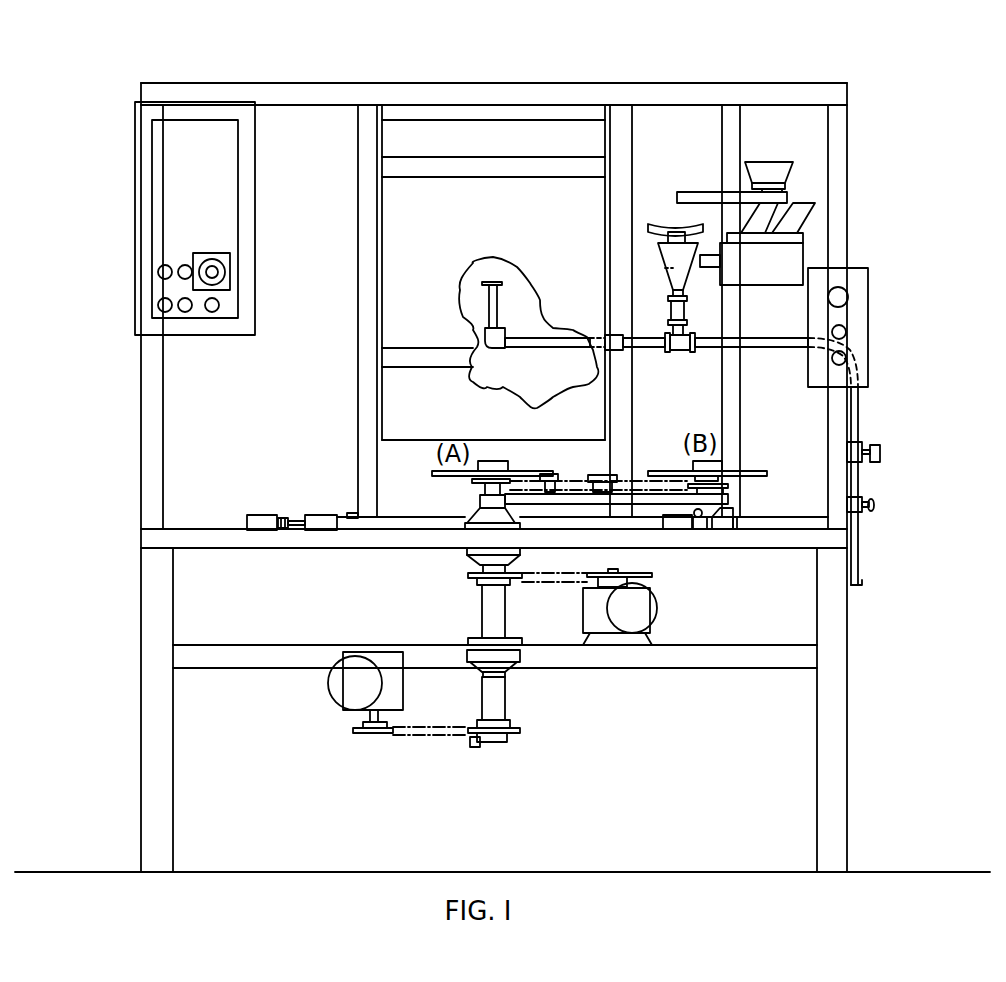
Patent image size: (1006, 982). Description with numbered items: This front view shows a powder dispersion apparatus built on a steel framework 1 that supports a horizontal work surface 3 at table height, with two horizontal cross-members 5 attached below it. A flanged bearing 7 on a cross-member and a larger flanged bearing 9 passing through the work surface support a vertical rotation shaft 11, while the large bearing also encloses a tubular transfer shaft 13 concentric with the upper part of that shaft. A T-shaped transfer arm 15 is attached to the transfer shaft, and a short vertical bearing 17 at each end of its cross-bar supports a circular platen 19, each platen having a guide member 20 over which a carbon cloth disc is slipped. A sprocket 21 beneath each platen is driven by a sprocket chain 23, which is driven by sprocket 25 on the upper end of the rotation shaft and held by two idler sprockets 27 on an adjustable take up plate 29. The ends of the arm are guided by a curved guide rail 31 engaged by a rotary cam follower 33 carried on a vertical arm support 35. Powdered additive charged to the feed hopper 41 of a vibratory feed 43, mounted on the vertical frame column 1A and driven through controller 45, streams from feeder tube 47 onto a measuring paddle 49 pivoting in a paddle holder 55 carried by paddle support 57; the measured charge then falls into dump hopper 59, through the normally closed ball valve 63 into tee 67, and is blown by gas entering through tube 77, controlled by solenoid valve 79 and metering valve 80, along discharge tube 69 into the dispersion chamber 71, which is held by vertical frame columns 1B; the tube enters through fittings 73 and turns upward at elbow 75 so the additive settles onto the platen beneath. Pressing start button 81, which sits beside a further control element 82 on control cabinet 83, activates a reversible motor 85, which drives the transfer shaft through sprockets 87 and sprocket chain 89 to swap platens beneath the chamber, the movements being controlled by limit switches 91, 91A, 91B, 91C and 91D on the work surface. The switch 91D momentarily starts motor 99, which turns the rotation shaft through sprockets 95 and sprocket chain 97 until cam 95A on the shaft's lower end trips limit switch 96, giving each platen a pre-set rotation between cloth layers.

The steel framework 1 is at (830, 648).
The vertical frame column 1A is at (728, 148).
The vertical frame columns 1B is at (363, 132).
The horizontal work surface 3 is at (827, 538).
The horizontal cross-members 5 is at (748, 660).
The flanged bearing 7 is at (502, 657).
The larger flanged bearing 9 is at (472, 557).
The rotation shaft 11 is at (480, 698).
The tubular transfer shaft 13 is at (480, 613).
The T-shaped transfer arm 15 is at (725, 499).
The short vertical bearing 17 is at (484, 490).
The circular platen 19 is at (434, 468).
The guide member 20 is at (490, 460).
The sprocket 21 is at (722, 484).
The sprocket chain 23 is at (635, 482).
The sprocket 25 is at (472, 482).
The idler sprockets 27 is at (612, 478).
The adjustable take up plate 29 is at (572, 490).
The curved guide rail 31 is at (287, 518).
The rotary cam follower 33 is at (703, 530).
The vertical arm support 35 is at (733, 520).
The feed hopper 41 is at (773, 173).
The vibratory feed 43 is at (797, 212).
The controller 45 is at (847, 312).
The feeder tube 47 is at (692, 197).
The measuring paddle 49 is at (641, 211).
The paddle holder 55 is at (652, 236).
The paddle support 57 is at (666, 275).
The dump hopper 59 is at (664, 248).
The ball valve 63 is at (668, 312).
The tee 67 is at (678, 343).
The discharge tube 69 is at (645, 348).
The dispersion chamber 71 is at (470, 240).
The fittings 73 is at (617, 342).
The elbow 75 is at (493, 337).
The tube 77 is at (773, 348).
The solenoid valve 79 is at (882, 455).
The metering valve 80 is at (876, 505).
The start button 81 is at (158, 272).
The main switch 82 is at (226, 270).
The control cabinet 83 is at (183, 180).
The reversible motor 85 is at (597, 618).
The sprockets 87 is at (473, 578).
The sprocket chain 89 is at (540, 583).
The limit switch 91 is at (263, 523).
The limit switch 91A is at (745, 522).
The limit switch 91B is at (312, 522).
The limit switch 91C is at (690, 523).
The limit switch 91D is at (353, 515).
The sprockets 95 is at (508, 723).
The cam 95A is at (510, 740).
The limit switch 96 is at (480, 748).
The sprocket chain 97 is at (417, 736).
The motor 99 is at (352, 683).